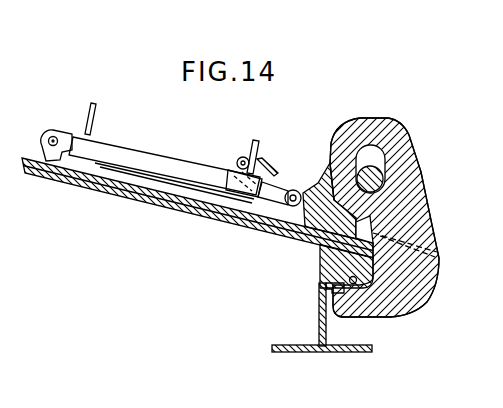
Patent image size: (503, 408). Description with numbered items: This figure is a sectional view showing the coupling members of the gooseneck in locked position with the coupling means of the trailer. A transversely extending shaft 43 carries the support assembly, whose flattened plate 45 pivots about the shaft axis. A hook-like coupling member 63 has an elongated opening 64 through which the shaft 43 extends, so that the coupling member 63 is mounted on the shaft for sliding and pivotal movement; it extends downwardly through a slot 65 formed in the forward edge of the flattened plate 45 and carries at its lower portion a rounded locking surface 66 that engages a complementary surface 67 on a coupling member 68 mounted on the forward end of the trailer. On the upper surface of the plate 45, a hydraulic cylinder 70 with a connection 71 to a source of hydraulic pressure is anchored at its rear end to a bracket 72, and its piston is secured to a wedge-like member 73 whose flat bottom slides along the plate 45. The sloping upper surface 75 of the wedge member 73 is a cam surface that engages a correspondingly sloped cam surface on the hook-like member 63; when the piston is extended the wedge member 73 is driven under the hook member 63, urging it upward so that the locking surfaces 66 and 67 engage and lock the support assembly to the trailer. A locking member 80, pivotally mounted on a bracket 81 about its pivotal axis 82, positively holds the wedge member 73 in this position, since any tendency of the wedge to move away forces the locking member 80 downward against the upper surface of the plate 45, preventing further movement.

The shaft 43 is at (383, 182).
The flattened plate 45 is at (213, 207).
The hook-like coupling member 63 is at (433, 223).
The slot 64 is at (384, 163).
The elongated opening 65 is at (374, 244).
The rounded locking surface 66 is at (324, 303).
The complementary surface 67 is at (326, 291).
The coupling member 68 is at (321, 262).
The hydraulic cylinder 70 is at (140, 160).
The connection 71 is at (100, 120).
The bracket 72 is at (45, 158).
The wedge-like member 73 is at (327, 190).
The upper surface 75 is at (330, 165).
The locking member 80 is at (274, 173).
The bracket 81 is at (235, 164).
The pivotal axis 82 is at (242, 158).